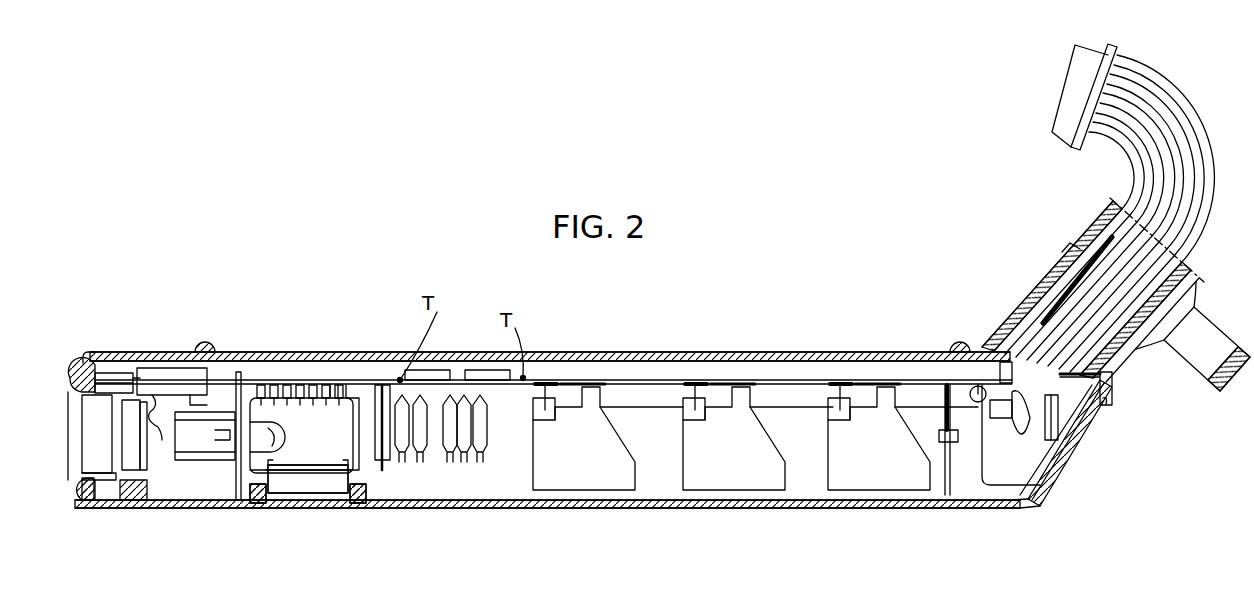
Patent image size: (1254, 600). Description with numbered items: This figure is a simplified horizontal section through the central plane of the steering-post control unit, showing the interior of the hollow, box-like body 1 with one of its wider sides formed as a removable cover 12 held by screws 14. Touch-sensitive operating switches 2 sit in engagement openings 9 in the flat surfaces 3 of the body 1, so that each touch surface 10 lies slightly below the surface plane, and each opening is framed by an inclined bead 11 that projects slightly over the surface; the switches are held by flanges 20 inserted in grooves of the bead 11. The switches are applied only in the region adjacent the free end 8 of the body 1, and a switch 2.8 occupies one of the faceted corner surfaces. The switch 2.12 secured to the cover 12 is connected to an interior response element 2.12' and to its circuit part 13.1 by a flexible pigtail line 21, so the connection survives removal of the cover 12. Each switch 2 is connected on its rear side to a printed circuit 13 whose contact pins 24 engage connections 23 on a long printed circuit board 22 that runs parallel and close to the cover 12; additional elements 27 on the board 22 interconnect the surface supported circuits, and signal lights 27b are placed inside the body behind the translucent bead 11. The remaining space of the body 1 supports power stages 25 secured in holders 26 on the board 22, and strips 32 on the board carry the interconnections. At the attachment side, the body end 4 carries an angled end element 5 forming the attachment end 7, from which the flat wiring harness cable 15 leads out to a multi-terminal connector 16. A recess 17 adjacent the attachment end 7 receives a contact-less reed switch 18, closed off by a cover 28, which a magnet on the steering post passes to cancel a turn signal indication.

The body 1 is at (810, 470).
The operating switches 2 is at (313, 482).
The switch on faceted surface 2.8 is at (97, 447).
The switch in cover 2.12 is at (172, 329).
The response element 2.12' is at (189, 466).
The flat surfaces 3 is at (636, 350).
The end of box structure 4 is at (1116, 397).
The angled end element 5 is at (1034, 304).
The attachment end 7 is at (1205, 330).
The free end 8 is at (70, 374).
The engagement openings 9 is at (195, 368).
The touch surface 10 is at (152, 372).
The bead 11 is at (62, 500).
The removable cover 12 is at (468, 357).
The printed circuit board 13 is at (332, 456).
The module part 13.1 is at (115, 445).
The screws 14 is at (206, 348).
The wiring harness cable 15 is at (1150, 184).
The multi-terminal connector 16 is at (1070, 115).
The recess 17 is at (1103, 403).
The contact-less switch 18 is at (1072, 446).
The flanges 20 is at (84, 498).
The flexible pigtail line 21 is at (162, 426).
The printed circuit board 22 is at (795, 382).
The connections 23 is at (346, 397).
The contact pins 24 is at (135, 373).
The power stages 25 is at (580, 462).
The holders 26 is at (575, 384).
The interconnecting elements 27 is at (480, 464).
The signal lights 27b is at (271, 436).
The cover 28 is at (1075, 437).
The terminal 32 is at (545, 410).